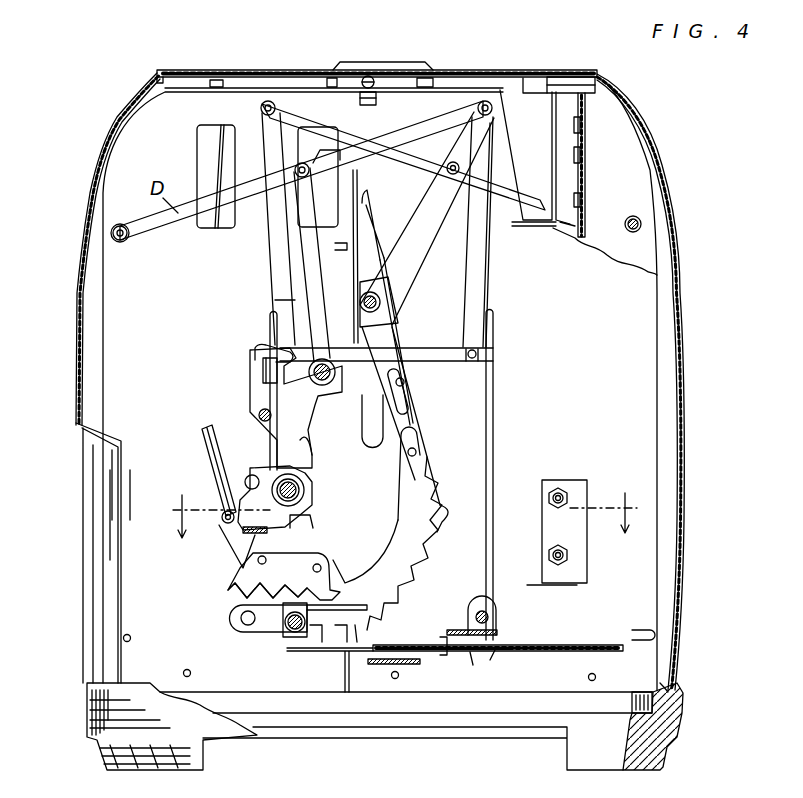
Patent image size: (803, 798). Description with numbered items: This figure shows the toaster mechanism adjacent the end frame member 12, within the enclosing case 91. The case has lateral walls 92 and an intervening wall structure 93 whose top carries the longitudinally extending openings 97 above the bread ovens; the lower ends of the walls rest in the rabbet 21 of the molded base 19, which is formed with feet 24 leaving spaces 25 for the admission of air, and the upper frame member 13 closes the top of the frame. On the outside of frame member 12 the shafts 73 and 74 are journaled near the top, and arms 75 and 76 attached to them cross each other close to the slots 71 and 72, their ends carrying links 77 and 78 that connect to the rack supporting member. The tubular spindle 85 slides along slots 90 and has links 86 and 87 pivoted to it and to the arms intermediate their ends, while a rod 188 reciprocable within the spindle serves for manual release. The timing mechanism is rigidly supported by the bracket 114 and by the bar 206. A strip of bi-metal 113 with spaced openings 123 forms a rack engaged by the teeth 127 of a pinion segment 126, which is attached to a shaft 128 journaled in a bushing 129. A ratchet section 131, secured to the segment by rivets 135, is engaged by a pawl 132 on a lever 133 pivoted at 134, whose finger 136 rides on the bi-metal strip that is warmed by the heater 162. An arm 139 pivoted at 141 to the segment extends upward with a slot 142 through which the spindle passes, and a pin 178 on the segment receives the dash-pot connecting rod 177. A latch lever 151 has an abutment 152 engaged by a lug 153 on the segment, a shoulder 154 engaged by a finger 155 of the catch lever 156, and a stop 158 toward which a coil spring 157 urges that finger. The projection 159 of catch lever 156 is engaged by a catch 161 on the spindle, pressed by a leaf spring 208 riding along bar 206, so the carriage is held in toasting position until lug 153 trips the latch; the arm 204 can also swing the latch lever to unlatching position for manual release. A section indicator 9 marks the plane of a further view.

The wall structure 93 is at (268, 70).
The openings 97 is at (512, 70).
The upper frame member 13 is at (560, 90).
The shaft 74 is at (641, 224).
The arm 75 is at (253, 198).
The shaft 73 is at (127, 242).
The arm 76 is at (505, 198).
The link 77 is at (272, 268).
The link 87 is at (285, 280).
The catch 161 is at (330, 240).
The link 78 is at (477, 268).
The link 86 is at (416, 247).
The spindle 85 is at (376, 302).
The rod 188 is at (382, 310).
The bar 206 is at (358, 175).
The leaf spring 208 is at (380, 208).
The projection 159 is at (380, 365).
The slot 72 is at (494, 396).
The slot 71 is at (268, 332).
The helical coil spring 157 is at (306, 386).
The stop 158 is at (266, 348).
The shoulder 154 is at (273, 383).
The finger 155 is at (264, 410).
The catch lever 156 is at (322, 358).
The slot 90 is at (360, 406).
The abutment 152 is at (300, 445).
The latch lever 151 is at (313, 462).
The lug 153 is at (250, 478).
The shaft 128 is at (303, 488).
The bushing 129 is at (300, 494).
The connecting rod 177 is at (206, 460).
The pin 178 is at (222, 513).
The arm 204 is at (240, 558).
The section line 9 is at (405, 528).
The arm 139 is at (415, 420).
The slot 142 is at (406, 383).
The pivot 141 is at (416, 452).
The pinion segment 126 is at (436, 492).
The teeth 127 is at (429, 560).
The ratchet wheel section 131 is at (248, 566).
The rivets 135 is at (314, 569).
The pawl 132 is at (230, 586).
The lever 133 is at (240, 616).
The pivot 134 is at (288, 636).
The finger 136 is at (368, 632).
The heater 162 is at (410, 664).
The bracket 114 is at (582, 584).
The strip of bi-metal 113 is at (525, 640).
The openings 123 is at (491, 666).
The spaces 25 is at (305, 748).
The feet 24 is at (165, 770).
The base 19 is at (670, 752).
The rabbet 21 is at (672, 685).
The lateral walls 92 is at (77, 360).
The end frame member 12 is at (640, 412).
The case 91 is at (103, 608).